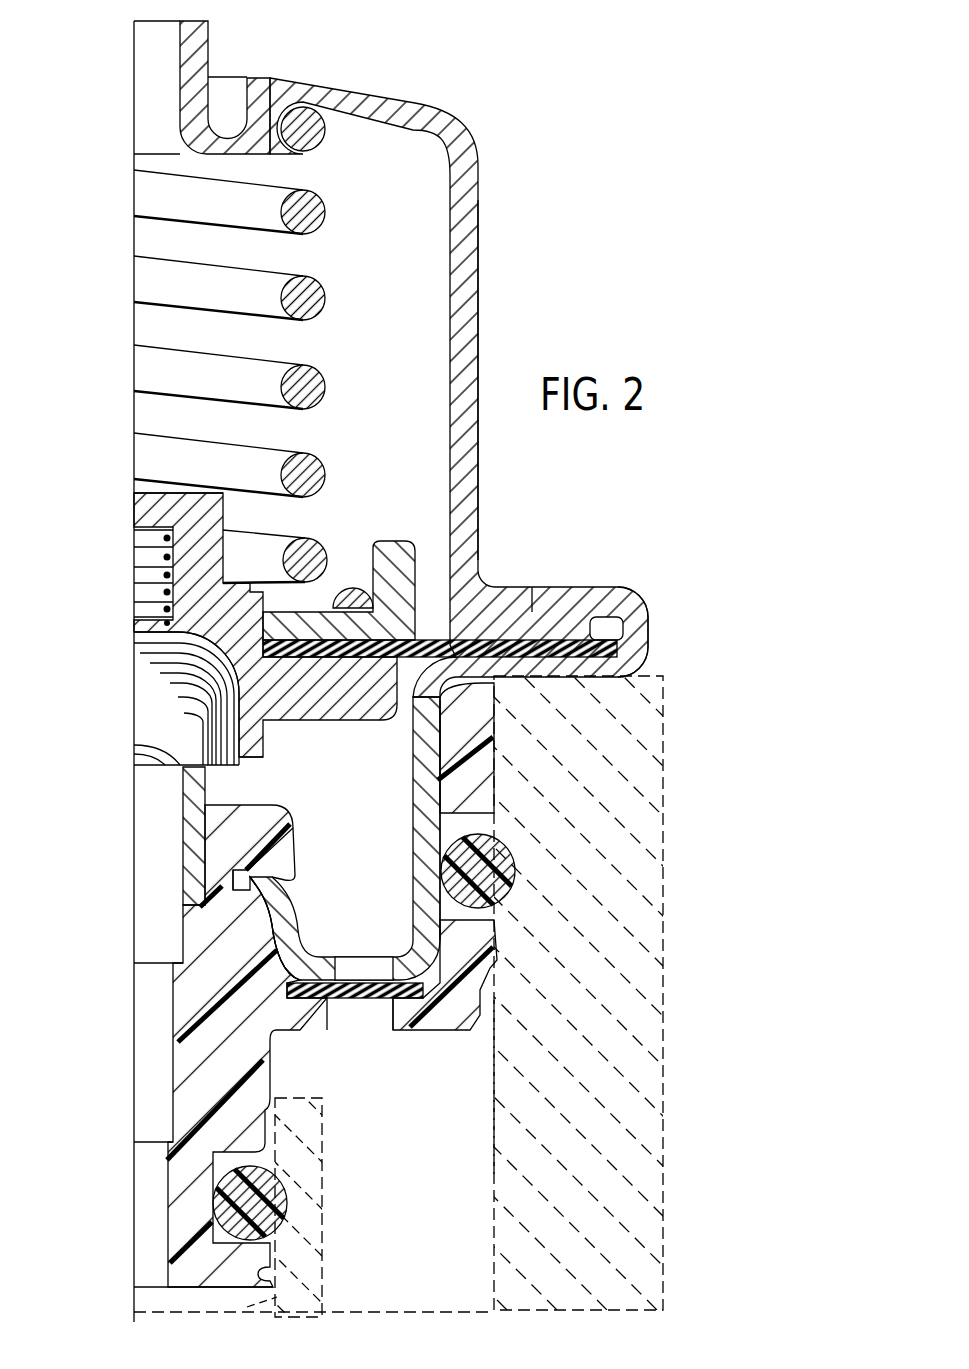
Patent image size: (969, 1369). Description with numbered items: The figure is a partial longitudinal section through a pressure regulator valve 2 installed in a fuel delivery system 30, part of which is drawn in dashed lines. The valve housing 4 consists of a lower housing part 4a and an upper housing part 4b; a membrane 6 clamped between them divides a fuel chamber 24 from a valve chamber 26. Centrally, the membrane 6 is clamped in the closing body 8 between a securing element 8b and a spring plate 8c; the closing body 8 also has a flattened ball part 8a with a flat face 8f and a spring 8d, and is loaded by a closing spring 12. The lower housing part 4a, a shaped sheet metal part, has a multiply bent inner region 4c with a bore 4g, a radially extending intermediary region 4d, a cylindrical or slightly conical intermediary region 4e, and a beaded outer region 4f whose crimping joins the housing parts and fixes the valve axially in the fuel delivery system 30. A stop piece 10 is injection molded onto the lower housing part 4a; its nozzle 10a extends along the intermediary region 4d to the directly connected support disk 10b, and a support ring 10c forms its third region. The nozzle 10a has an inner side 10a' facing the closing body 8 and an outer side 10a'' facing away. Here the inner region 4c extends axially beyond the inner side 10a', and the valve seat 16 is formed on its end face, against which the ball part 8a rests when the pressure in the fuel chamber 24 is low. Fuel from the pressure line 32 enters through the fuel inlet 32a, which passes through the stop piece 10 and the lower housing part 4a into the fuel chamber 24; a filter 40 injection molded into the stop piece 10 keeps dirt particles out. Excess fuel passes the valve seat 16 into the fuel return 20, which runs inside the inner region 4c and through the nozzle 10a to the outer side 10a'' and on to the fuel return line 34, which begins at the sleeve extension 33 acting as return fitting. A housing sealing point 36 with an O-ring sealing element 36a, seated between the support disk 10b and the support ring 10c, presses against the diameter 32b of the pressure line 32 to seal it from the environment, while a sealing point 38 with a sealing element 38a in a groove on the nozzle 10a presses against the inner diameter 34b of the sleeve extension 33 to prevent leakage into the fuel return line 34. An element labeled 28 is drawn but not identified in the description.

The pressure regulator valve 2 is at (563, 210).
The valve housing 4 is at (480, 355).
The lower housing part 4a is at (412, 777).
The upper housing part 4b is at (477, 440).
The inner region 4c is at (243, 837).
The radially extending intermediary region 4d is at (320, 975).
The cylindrically or slightly conically extending intermediary region 4e is at (438, 858).
The outer region 4f is at (640, 625).
The bore 4g is at (232, 893).
The membrane 6 is at (423, 637).
The closing body 8 is at (134, 633).
The flattened ball part 8a is at (160, 698).
The securing element 8b is at (134, 505).
The spring plate 8c is at (380, 580).
The spring 8d is at (157, 563).
The flat face 8f is at (157, 773).
The stop piece 10 is at (313, 1050).
The nozzle 10a is at (169, 1026).
The inner side 10a' is at (179, 867).
The outer side 10a'' is at (128, 1245).
The support disk 10b is at (470, 953).
The support ring 10c is at (497, 742).
The closing spring 12 is at (317, 274).
The valve seat 16 is at (160, 745).
The fuel return 20 is at (160, 991).
The fuel chamber 24 is at (372, 836).
The valve chamber 26 is at (394, 360).
The end cap 28 is at (160, 62).
The fuel delivery system 30 is at (671, 1041).
The pressure line 32 is at (452, 1270).
The fuel inlet 32a is at (353, 1013).
The diameter 32b is at (493, 1182).
The sleeve extension 33 is at (305, 1263).
The fuel return line 34 is at (160, 1296).
The inner diameter 34b is at (238, 1307).
The housing sealing point 36 is at (523, 847).
The sealing element 36a is at (517, 878).
The sealing point 38 is at (292, 1182).
The sealing element 38a is at (263, 1213).
The filter 40 is at (378, 998).